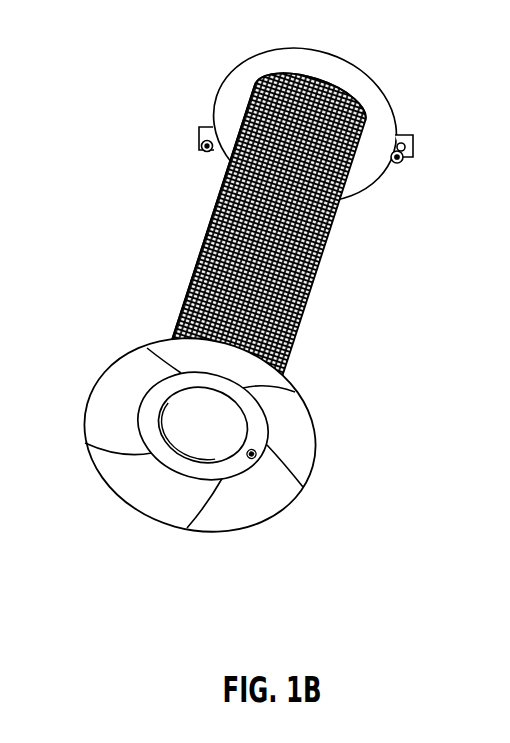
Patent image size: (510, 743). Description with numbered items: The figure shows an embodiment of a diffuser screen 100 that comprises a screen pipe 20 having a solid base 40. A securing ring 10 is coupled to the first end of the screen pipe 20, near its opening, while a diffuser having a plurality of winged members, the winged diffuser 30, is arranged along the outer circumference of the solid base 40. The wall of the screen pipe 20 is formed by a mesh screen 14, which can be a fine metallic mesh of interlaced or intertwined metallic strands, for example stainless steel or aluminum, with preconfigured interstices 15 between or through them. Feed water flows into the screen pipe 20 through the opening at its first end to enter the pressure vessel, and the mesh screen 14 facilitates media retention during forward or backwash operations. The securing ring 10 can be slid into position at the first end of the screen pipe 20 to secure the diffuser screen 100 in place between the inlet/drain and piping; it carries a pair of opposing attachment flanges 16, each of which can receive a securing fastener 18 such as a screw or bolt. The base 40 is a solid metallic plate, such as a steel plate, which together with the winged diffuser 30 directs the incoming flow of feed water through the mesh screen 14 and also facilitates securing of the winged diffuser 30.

The diffuser screen 100 is at (168, 42).
The securing ring 10 is at (373, 82).
The mesh screen 14 is at (323, 77).
The interstices 15 is at (207, 232).
The attachment flanges 16 is at (201, 130).
The securing fastener 18 is at (413, 157).
The screen pipe 20 is at (327, 238).
The winged diffuser 30 is at (92, 390).
The solid base 40 is at (213, 448).